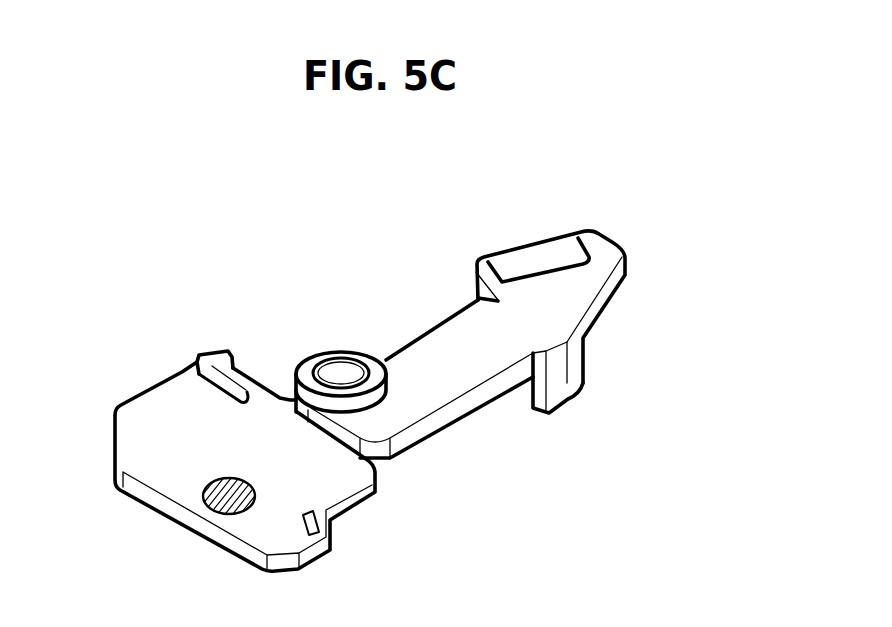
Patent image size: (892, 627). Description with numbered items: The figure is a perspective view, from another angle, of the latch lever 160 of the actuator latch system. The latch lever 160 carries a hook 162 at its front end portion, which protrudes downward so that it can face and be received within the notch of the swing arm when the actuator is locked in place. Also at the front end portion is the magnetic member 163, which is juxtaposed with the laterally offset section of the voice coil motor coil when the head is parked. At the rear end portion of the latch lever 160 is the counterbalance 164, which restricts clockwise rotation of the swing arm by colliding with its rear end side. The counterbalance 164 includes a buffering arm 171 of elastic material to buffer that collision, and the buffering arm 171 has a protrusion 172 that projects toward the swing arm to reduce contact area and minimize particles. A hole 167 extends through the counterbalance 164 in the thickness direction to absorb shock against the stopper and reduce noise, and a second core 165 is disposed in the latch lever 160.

The latch lever 160 is at (460, 445).
The hook 162 is at (551, 404).
The magnetic member 163 is at (530, 244).
The counterbalance 164 is at (163, 478).
The second core 165 is at (213, 511).
The hole 167 is at (313, 534).
The buffering arm 171 is at (238, 375).
The protrusion 172 is at (220, 355).